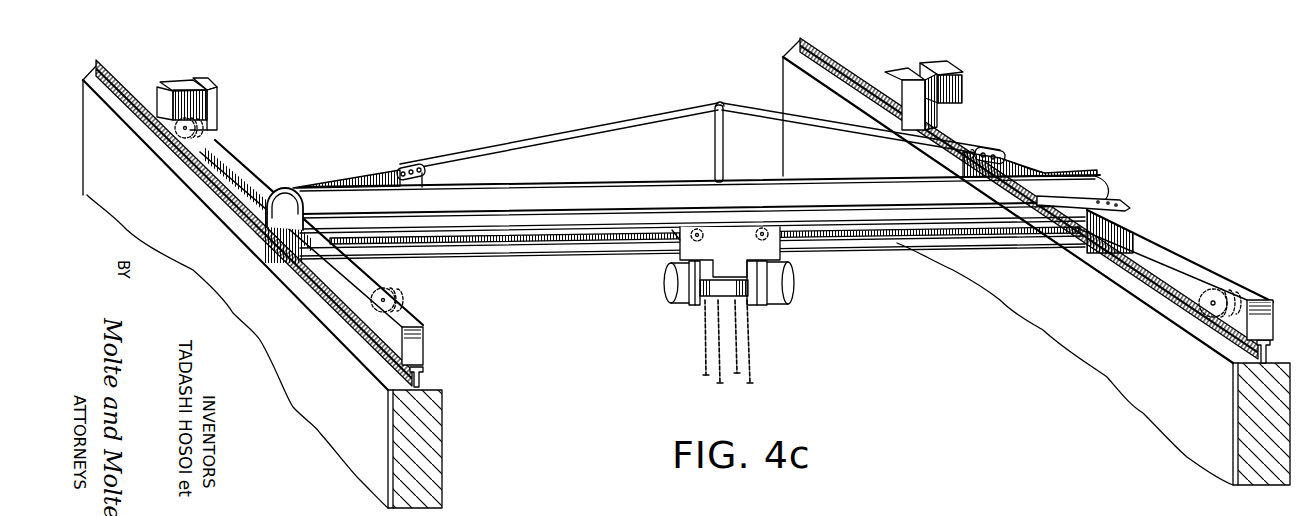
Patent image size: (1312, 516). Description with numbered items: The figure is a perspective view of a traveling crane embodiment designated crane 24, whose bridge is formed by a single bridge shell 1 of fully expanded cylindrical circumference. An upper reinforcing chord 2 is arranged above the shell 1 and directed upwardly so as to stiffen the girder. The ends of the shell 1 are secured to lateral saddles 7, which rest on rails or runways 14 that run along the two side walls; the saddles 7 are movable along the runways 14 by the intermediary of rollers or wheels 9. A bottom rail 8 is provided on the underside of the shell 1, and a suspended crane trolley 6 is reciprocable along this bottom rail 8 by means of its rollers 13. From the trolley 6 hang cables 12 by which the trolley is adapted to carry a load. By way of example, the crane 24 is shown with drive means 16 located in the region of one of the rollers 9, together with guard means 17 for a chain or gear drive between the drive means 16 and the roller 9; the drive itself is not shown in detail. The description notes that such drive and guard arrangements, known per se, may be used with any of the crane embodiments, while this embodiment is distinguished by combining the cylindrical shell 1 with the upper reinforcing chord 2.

The bridge shell 1 is at (626, 199).
The upper reinforcing chord 2 is at (577, 133).
The crane trolley 6 is at (749, 305).
The lateral saddle 7 is at (424, 354).
The bottom rail 8 is at (575, 244).
The roller 9 is at (165, 136).
The cables 12 is at (740, 337).
The roller 13 is at (751, 239).
The runway 14 is at (112, 64).
The drive means 16 is at (178, 82).
The guard means 17 is at (214, 107).
The crane 24 is at (695, 138).